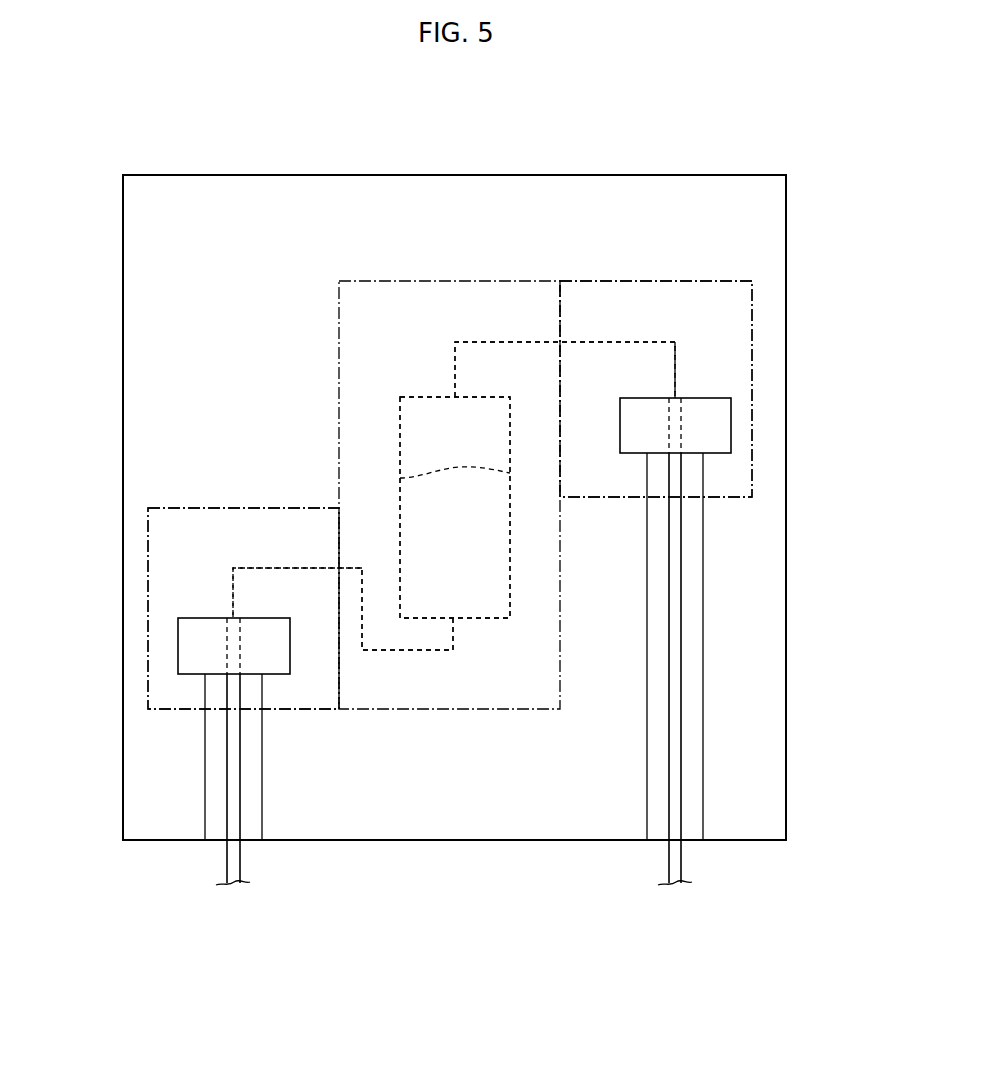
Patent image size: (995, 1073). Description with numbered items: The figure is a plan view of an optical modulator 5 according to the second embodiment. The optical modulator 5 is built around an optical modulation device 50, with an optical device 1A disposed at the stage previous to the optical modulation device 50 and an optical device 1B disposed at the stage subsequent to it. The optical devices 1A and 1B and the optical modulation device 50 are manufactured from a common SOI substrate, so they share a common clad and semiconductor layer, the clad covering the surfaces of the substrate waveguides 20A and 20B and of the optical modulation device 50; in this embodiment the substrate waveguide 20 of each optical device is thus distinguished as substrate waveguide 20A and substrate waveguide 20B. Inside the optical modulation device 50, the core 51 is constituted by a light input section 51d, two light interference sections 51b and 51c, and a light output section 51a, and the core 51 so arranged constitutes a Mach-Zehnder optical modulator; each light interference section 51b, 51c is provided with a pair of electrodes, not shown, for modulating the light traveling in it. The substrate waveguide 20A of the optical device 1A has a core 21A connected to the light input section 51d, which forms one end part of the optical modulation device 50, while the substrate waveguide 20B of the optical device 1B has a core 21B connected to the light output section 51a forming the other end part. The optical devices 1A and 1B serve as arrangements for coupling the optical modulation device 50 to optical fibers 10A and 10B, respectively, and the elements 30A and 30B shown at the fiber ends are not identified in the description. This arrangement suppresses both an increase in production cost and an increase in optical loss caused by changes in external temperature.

The optical modulator 5 is at (793, 147).
The substrate waveguide 20 is at (775, 232).
The substrate waveguide 20A is at (177, 549).
The substrate waveguide 20B is at (730, 326).
The optical device 1A is at (197, 508).
The optical device 1B is at (638, 281).
The first semiconductor element 30A is at (178, 643).
The second semiconductor element 30B is at (731, 424).
The optical fiber 10A is at (227, 747).
The optical fiber 10B is at (681, 528).
The core 21A is at (277, 568).
The core 21B is at (684, 372).
The optical modulation device 50 is at (443, 281).
The core 51 is at (378, 357).
The light output section 51a is at (540, 342).
The light interference section 51b is at (400, 422).
The light interference section 51c is at (400, 478).
The light input section 51d is at (413, 660).